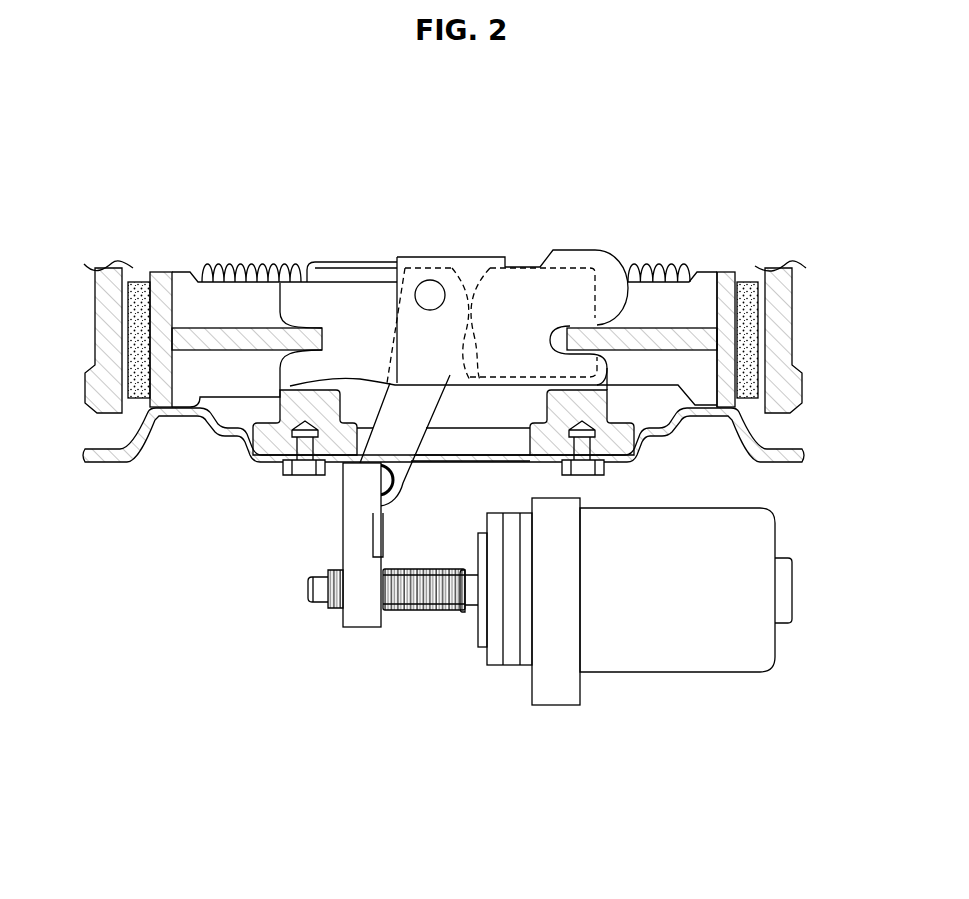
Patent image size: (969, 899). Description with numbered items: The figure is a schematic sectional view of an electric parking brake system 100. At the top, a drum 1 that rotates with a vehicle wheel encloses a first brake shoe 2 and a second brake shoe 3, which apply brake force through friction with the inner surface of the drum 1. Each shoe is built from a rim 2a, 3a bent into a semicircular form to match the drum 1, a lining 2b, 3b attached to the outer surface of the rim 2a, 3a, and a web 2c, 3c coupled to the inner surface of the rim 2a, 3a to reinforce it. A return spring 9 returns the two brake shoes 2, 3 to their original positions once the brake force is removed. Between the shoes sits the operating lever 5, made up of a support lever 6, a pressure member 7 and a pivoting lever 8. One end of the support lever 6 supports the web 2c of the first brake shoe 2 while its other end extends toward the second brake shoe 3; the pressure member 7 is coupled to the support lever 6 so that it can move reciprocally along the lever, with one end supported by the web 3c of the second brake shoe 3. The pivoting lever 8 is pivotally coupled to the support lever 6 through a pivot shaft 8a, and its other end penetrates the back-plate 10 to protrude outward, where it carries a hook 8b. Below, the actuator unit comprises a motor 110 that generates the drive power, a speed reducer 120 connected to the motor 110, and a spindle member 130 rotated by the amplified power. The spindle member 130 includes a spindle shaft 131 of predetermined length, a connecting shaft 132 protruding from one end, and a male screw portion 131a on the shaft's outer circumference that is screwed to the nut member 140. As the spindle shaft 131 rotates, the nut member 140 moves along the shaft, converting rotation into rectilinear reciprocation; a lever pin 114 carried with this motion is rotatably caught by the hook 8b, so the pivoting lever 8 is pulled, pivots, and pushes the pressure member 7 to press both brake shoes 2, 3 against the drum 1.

The electric parking brake system 100 is at (560, 147).
The drum 1 is at (105, 327).
The first brake shoe 2 is at (218, 291).
The rim 2a is at (163, 282).
The lining 2b is at (140, 300).
The web 2c is at (243, 332).
The second brake shoe 3 is at (716, 292).
The rim 3a is at (725, 282).
The lining 3b is at (752, 300).
The web 3c is at (668, 330).
The operating lever 5 is at (495, 242).
The support lever 6 is at (367, 290).
The pressure member 7 is at (592, 280).
The pivoting lever 8 is at (387, 443).
The pivot shaft 8a is at (430, 293).
The hook 8b is at (352, 493).
The return spring 9 is at (300, 263).
The back-plate 10 is at (268, 467).
The motor 110 is at (660, 672).
The lever pin 114 is at (395, 481).
The speed reducer 120 is at (626, 645).
The spindle member 130 is at (389, 635).
The spindle shaft 131 is at (403, 590).
The male screw portion 131a is at (402, 568).
The connecting shaft 132 is at (323, 590).
The nut member 140 is at (350, 541).